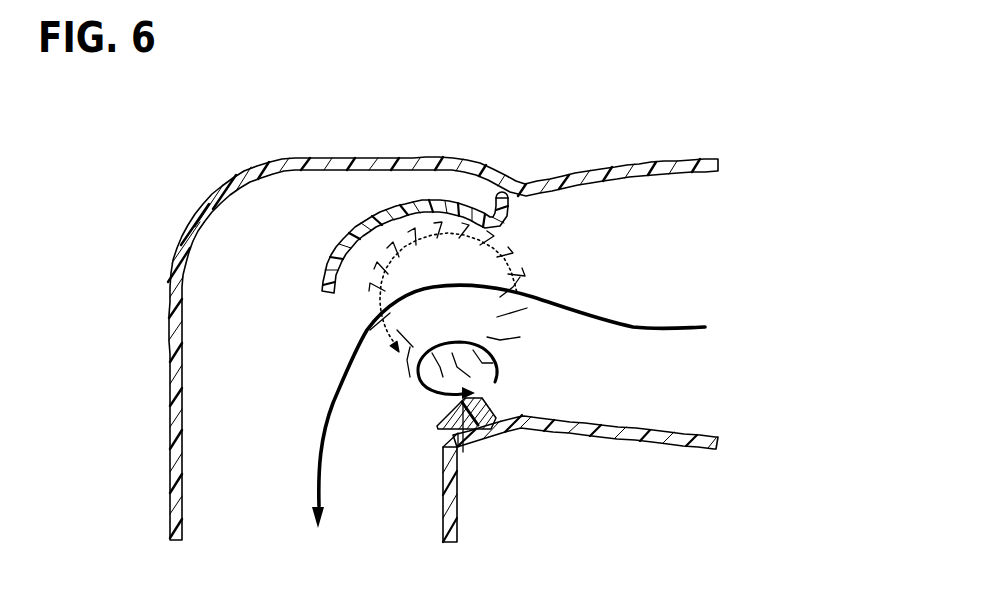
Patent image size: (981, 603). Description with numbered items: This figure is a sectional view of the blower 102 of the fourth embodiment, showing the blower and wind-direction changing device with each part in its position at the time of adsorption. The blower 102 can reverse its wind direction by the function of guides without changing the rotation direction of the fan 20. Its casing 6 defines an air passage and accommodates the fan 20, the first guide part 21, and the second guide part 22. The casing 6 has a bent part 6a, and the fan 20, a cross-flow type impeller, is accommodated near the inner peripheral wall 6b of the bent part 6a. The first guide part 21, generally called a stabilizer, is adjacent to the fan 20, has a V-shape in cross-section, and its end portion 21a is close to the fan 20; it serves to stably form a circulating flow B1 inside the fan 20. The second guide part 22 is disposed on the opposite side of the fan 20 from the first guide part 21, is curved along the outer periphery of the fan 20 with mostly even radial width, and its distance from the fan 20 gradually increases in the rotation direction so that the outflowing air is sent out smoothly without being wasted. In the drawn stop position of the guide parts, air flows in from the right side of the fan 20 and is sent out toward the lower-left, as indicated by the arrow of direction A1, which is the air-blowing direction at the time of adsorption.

The casing 6 is at (168, 513).
The bent part 6a is at (181, 239).
The inner peripheral wall 6b is at (490, 437).
The fan 20 is at (508, 258).
The first guide part 21 is at (463, 452).
The end portion 21a is at (472, 398).
The second guide part 22 is at (442, 206).
The blower 102 is at (386, 200).
The direction A1 is at (680, 327).
The circulating flow B1 is at (428, 388).